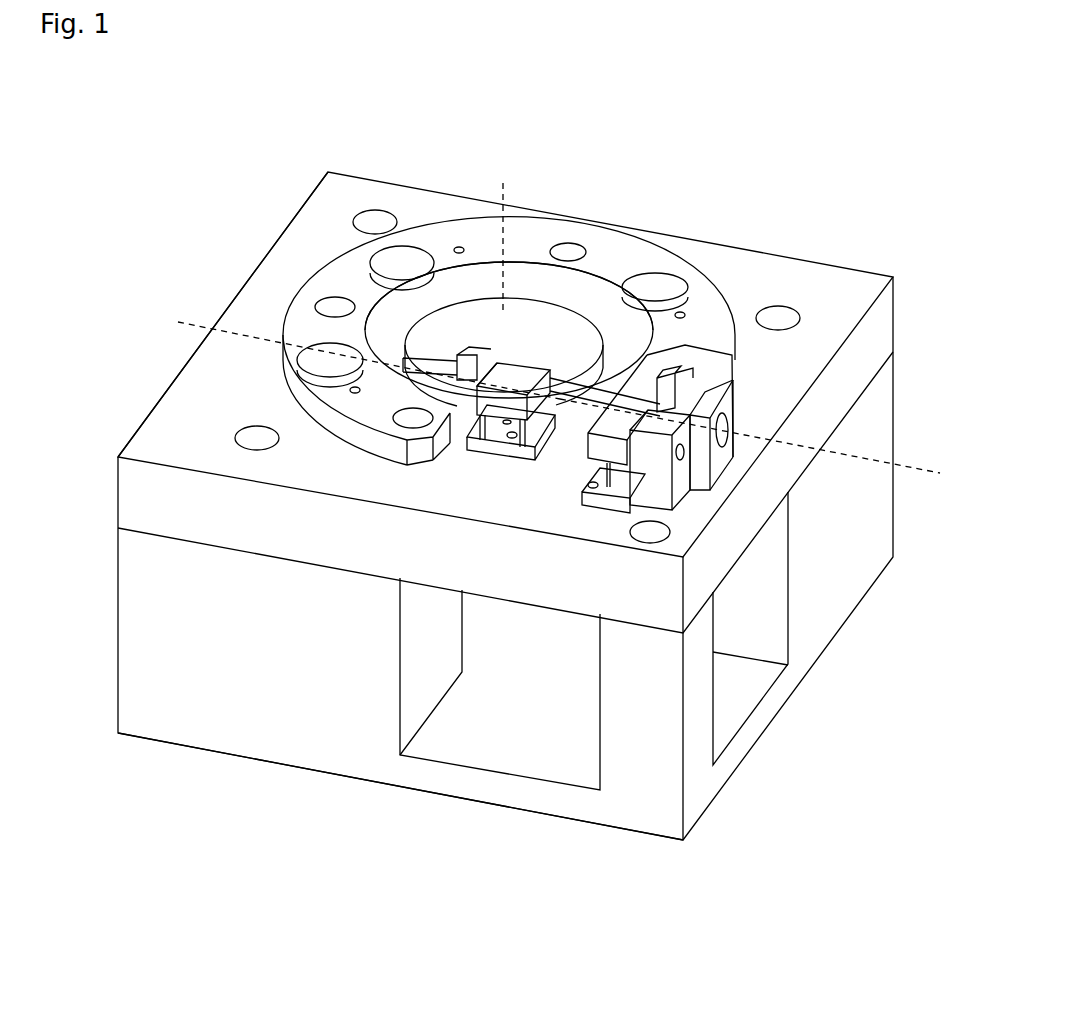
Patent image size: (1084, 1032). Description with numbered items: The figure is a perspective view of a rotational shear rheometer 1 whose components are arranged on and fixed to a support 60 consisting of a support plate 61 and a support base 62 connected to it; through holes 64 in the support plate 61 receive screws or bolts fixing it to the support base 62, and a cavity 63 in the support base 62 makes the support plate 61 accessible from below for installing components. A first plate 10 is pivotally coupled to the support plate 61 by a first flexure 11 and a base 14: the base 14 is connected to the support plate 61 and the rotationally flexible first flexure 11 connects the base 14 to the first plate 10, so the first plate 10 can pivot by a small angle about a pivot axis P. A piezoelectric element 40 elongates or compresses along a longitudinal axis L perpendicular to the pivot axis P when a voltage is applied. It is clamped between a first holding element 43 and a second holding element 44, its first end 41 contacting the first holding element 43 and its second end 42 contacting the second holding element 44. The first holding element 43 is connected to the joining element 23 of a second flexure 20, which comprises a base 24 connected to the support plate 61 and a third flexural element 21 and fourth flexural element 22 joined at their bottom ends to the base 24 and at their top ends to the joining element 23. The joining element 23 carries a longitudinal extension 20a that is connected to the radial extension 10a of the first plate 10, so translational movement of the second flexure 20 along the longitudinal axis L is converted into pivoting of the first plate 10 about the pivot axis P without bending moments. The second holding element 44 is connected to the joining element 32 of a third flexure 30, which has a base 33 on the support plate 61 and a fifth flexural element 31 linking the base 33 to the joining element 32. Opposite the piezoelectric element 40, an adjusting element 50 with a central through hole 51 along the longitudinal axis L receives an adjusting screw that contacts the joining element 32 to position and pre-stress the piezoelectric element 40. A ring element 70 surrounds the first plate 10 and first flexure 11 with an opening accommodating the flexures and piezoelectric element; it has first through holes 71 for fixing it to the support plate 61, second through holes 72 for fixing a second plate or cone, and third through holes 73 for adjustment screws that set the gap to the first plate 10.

The rotational shear rheometer 1 is at (575, 158).
The first plate 10 is at (386, 275).
The radial extension 10a is at (333, 287).
The first flexure 11 is at (320, 360).
The base 14 is at (437, 437).
The second flexure 20 is at (520, 378).
The longitudinal extension 20a is at (480, 372).
The third flexural element 21 is at (527, 450).
The fourth flexural element 22 is at (483, 450).
The joining element 23 is at (513, 450).
The base 24 is at (498, 450).
The third flexure 30 is at (712, 366).
The fifth flexural element 31 is at (620, 478).
The joining element 32 is at (632, 505).
The base 33 is at (597, 500).
The piezoelectric element 40 is at (648, 350).
The first end 41 is at (614, 393).
The second end 42 is at (658, 363).
The first holding element 43 is at (567, 393).
The second holding element 44 is at (733, 333).
The adjusting element 50 is at (705, 413).
The central through hole 51 is at (728, 425).
The support 60 is at (847, 293).
The support plate 61 is at (137, 500).
The support base 62 is at (137, 598).
The cavity 63 is at (764, 612).
The through holes 64 is at (778, 318).
The ring element 70 is at (330, 287).
The first through holes 71 is at (330, 358).
The second through holes 72 is at (570, 250).
The third through holes 73 is at (452, 287).
The pivot axis P is at (502, 234).
The longitudinal axis L is at (761, 442).